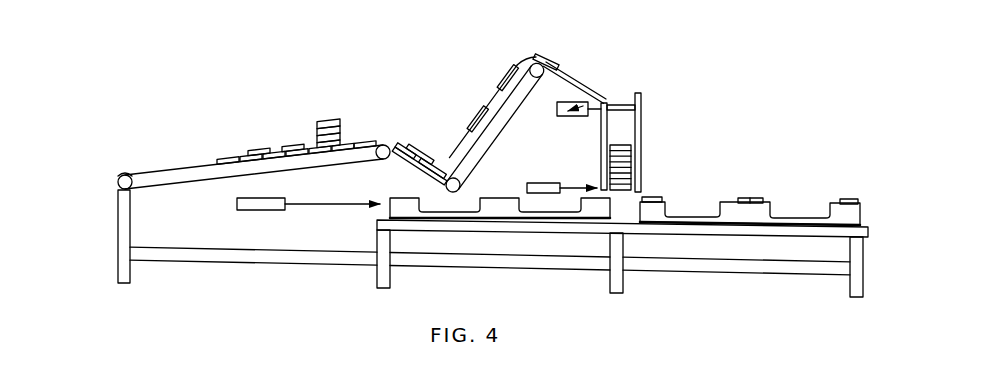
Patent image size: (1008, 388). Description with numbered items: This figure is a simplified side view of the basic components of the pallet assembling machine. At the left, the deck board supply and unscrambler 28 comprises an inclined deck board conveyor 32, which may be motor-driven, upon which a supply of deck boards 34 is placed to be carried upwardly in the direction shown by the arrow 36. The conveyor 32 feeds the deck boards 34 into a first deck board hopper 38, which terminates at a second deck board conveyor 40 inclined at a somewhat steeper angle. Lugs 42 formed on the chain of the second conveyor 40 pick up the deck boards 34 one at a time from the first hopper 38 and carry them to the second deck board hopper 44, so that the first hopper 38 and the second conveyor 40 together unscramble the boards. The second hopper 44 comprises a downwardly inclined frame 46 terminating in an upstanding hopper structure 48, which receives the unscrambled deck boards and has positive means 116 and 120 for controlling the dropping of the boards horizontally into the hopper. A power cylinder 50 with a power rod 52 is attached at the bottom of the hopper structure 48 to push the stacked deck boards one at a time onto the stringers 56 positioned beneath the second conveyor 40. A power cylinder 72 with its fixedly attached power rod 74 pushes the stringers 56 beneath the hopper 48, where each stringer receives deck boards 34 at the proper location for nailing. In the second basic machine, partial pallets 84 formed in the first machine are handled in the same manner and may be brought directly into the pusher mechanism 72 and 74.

The deck board supply and unscrambler 28 is at (203, 125).
The deck board conveyor 32 is at (138, 172).
The deck boards 34 is at (290, 135).
The arrow 36 is at (222, 143).
The first deck board hopper 38 is at (420, 130).
The second deck board conveyor 40 is at (492, 102).
The lugs 42 is at (474, 134).
The second deck board hopper 44 is at (588, 70).
The downwardly inclined frame 46 is at (596, 95).
The hopper structure 48 is at (620, 128).
The power cylinder 50 is at (543, 183).
The power rod 52 is at (573, 187).
The stringers 56 is at (403, 207).
The power cylinder 72 is at (260, 209).
The power rod 74 is at (309, 204).
The partial pallets 84 is at (813, 185).
The positive means for controlling dropping of deck boards 116 is at (563, 117).
The positive means for controlling dropping of deck boards 120 is at (640, 93).